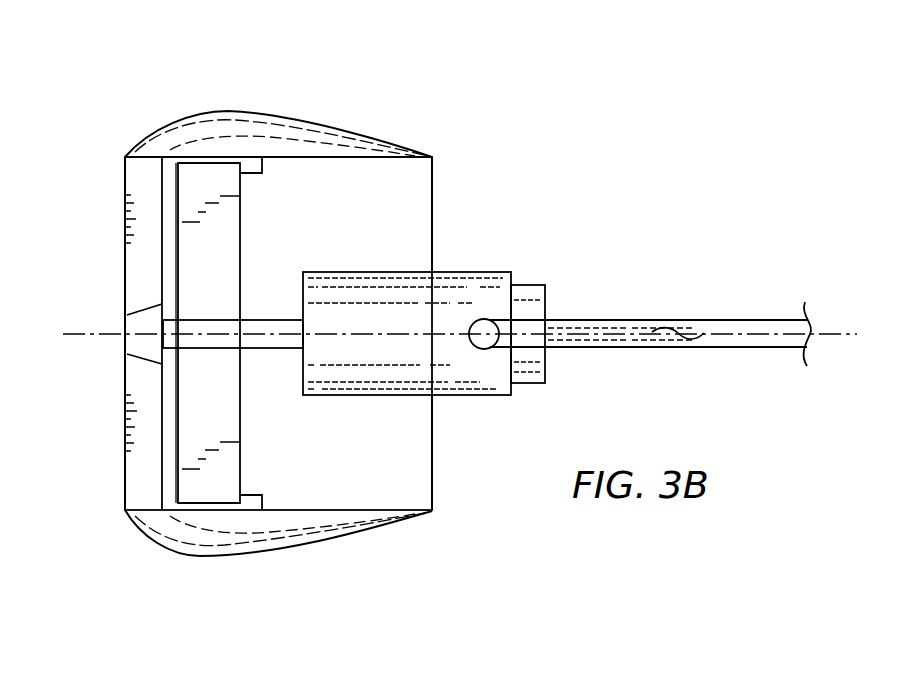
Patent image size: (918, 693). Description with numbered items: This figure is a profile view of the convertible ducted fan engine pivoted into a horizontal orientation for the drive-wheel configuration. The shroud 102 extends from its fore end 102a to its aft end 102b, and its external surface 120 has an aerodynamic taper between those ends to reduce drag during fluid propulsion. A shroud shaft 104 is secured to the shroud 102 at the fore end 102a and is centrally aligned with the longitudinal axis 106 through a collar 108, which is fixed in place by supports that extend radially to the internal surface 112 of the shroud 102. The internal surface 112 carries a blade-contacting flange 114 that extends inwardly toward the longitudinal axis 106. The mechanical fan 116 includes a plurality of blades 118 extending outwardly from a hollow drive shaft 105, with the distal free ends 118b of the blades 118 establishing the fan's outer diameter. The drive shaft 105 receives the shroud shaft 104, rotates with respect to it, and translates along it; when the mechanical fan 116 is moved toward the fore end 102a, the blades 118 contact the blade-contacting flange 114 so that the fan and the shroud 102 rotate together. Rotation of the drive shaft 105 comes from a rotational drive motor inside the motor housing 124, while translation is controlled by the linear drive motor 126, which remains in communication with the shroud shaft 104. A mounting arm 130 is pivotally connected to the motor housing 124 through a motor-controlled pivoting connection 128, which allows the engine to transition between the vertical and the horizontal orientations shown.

The shroud 102 is at (275, 108).
The fore end 102a is at (125, 513).
The aft end 102b is at (433, 511).
The shroud shaft 104 is at (648, 326).
The drive shaft 105 is at (282, 350).
The longitudinal axis 106 is at (683, 340).
The collar 108 is at (130, 318).
The internal surface 112 is at (433, 160).
The blade-contacting flange 114 is at (263, 165).
The mechanical fan 116 is at (300, 258).
The blades 118 is at (242, 213).
The distal free ends 118b is at (196, 164).
The external surface 120 is at (241, 130).
The motor housing 124 is at (482, 272).
The linear drive motor 126 is at (532, 385).
The pivoting connection 128 is at (484, 334).
The mounting arm 130 is at (735, 349).